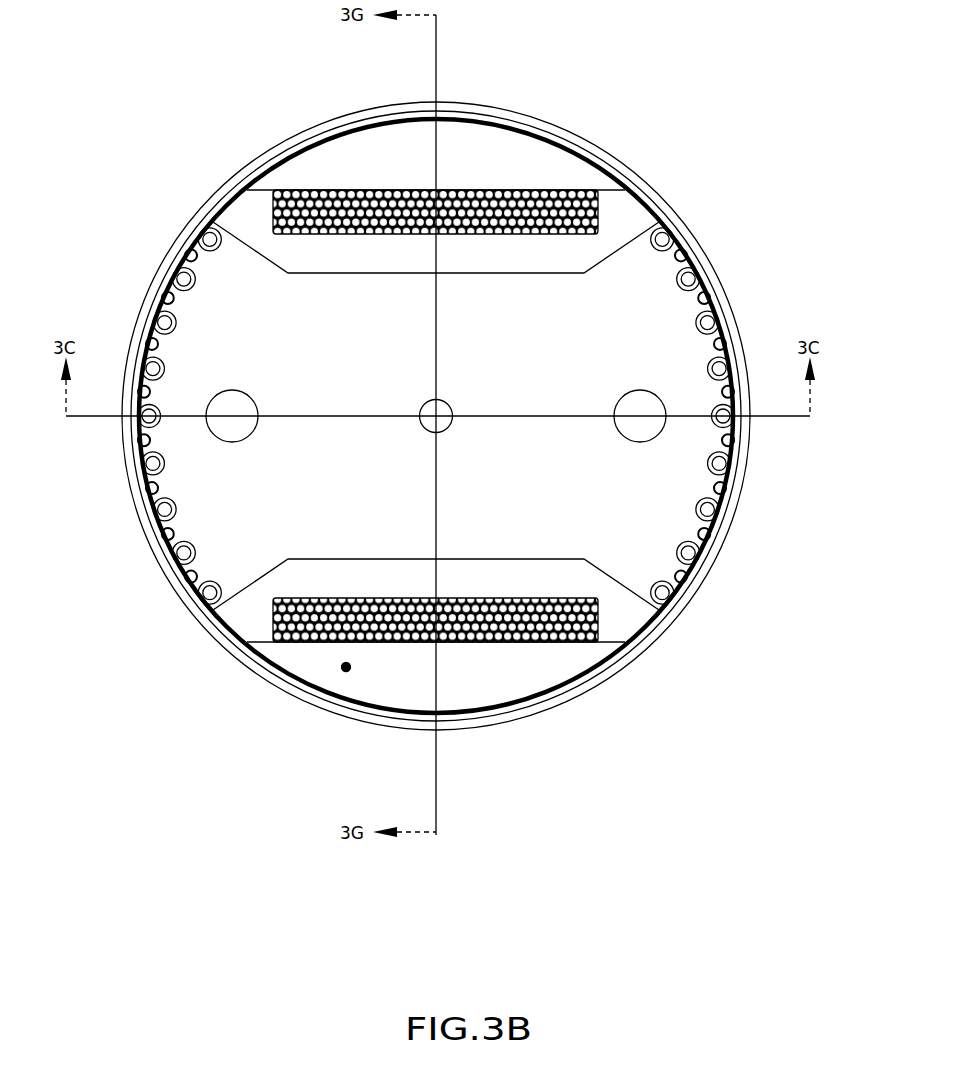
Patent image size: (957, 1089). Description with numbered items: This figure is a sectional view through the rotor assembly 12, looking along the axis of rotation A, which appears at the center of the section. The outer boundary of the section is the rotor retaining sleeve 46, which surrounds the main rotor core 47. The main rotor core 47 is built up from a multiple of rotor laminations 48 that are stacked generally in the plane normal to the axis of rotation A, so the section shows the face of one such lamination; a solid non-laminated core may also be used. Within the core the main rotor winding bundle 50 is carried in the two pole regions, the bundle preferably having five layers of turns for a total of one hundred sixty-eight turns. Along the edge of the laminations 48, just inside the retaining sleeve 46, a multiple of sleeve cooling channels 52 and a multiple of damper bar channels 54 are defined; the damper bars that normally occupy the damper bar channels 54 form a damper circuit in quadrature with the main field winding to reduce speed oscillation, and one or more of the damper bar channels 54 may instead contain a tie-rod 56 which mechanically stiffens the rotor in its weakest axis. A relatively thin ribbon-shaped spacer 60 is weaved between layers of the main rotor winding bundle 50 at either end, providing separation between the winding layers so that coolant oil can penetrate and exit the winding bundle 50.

The rotor assembly 12 is at (637, 425).
The rotor retaining sleeve 46 is at (548, 132).
The main rotor core 47 is at (345, 667).
The rotor laminations 48 is at (530, 372).
The main rotor winding bundle 50 is at (588, 190).
The sleeve cooling channels 52 is at (681, 252).
The damper bar channels 54 is at (716, 308).
The tie-rod 56 is at (723, 335).
The spacer 60 is at (597, 192).
The axis of rotation A is at (428, 433).